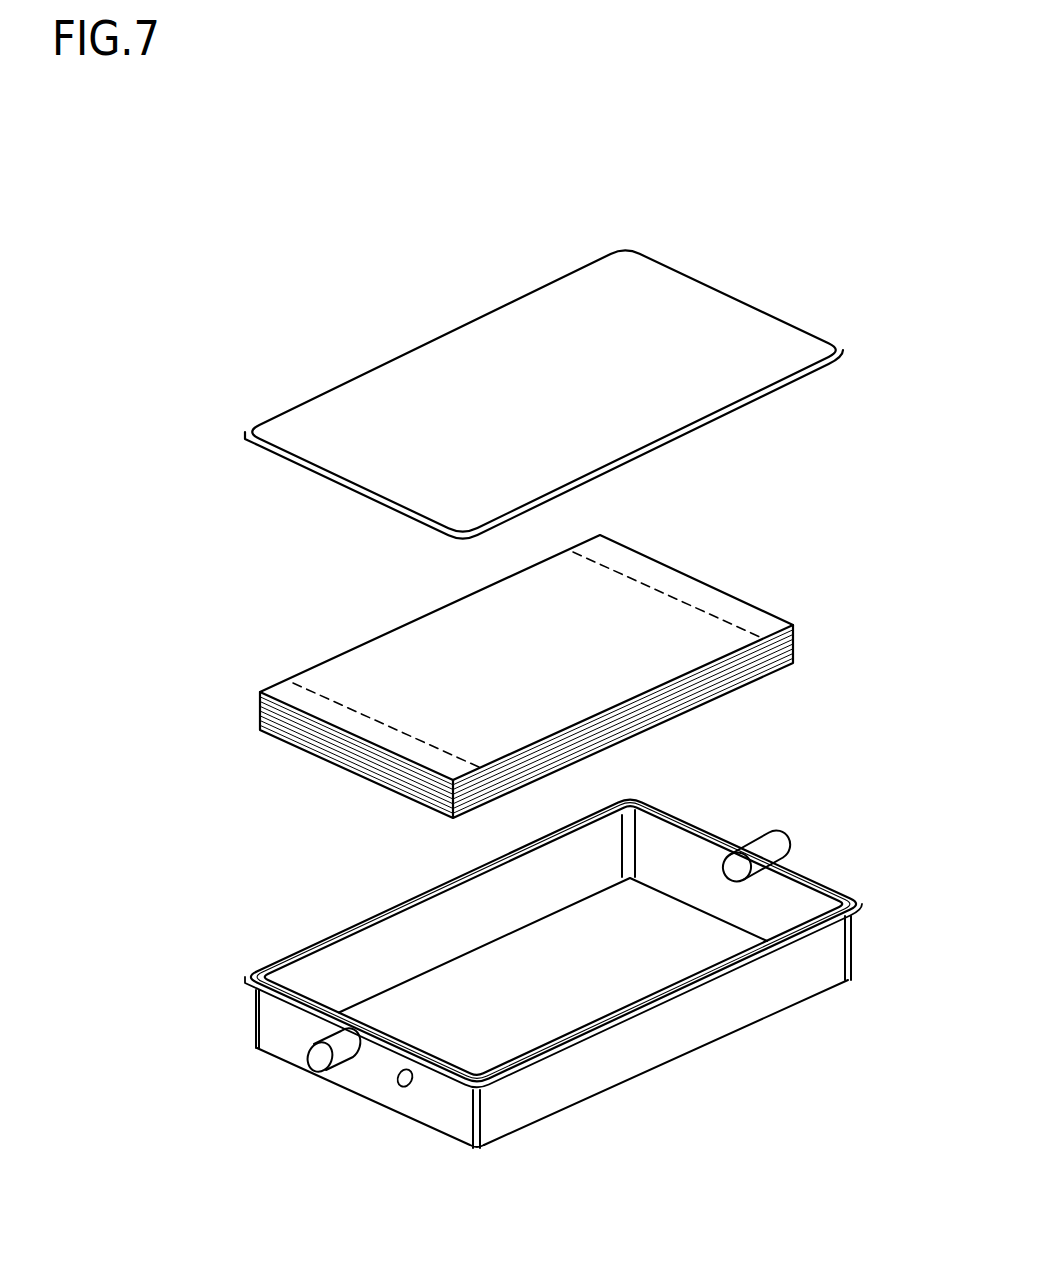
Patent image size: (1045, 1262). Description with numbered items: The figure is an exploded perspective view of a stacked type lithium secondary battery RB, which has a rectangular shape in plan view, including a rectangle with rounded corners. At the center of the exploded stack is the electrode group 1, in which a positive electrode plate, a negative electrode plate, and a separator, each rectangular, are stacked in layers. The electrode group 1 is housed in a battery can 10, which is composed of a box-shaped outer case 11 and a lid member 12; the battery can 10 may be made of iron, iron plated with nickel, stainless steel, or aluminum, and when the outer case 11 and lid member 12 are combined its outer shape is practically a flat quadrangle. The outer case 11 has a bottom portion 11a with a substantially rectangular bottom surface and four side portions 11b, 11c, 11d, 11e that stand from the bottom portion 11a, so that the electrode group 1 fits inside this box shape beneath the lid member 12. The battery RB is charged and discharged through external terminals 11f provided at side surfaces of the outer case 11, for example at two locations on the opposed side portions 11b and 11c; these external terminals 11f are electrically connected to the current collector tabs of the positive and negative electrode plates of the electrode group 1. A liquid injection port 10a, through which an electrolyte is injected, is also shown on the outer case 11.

The stacked type lithium secondary battery RB is at (775, 226).
The electrode group 1 is at (277, 692).
The battery can 10 is at (516, 709).
The outer case 11 is at (252, 975).
The lid member 12 is at (259, 417).
The liquid injection port 10a is at (402, 1090).
The bottom portion 11a is at (585, 1003).
The side portion 11b is at (290, 1024).
The side portion 11c is at (810, 907).
The side portion 11d is at (398, 930).
The side portion 11e is at (703, 1005).
The external terminal 11f is at (316, 1060).